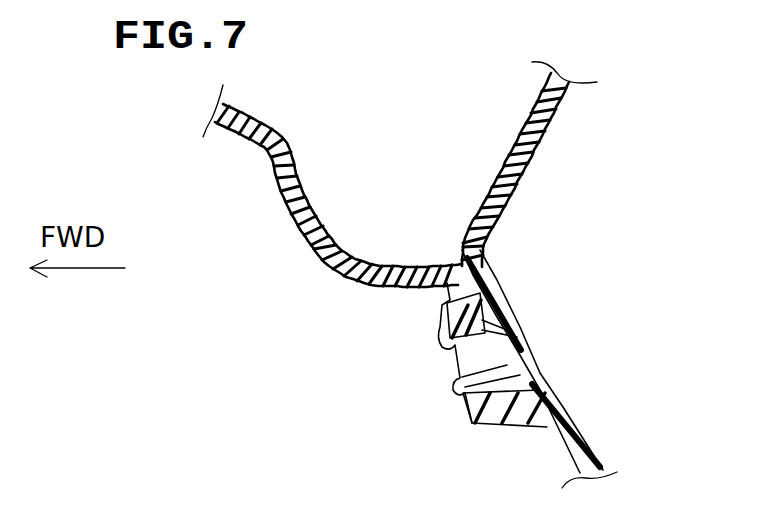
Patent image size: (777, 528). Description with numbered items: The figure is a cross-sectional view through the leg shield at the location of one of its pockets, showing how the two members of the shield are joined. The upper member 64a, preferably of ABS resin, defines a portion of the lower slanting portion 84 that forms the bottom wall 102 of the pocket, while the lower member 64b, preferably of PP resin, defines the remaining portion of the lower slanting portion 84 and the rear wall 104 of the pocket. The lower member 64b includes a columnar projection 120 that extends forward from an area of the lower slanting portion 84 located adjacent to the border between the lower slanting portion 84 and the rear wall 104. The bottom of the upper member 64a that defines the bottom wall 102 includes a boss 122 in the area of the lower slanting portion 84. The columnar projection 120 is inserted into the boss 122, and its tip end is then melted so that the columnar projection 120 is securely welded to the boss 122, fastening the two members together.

The upper member 64a is at (332, 211).
The lower member 64b is at (545, 164).
The bottom wall 102 is at (294, 254).
The rear wall 104 is at (528, 163).
The lower slanting portion 84 is at (553, 393).
The columnar projection 120 is at (438, 340).
The boss 122 is at (467, 430).